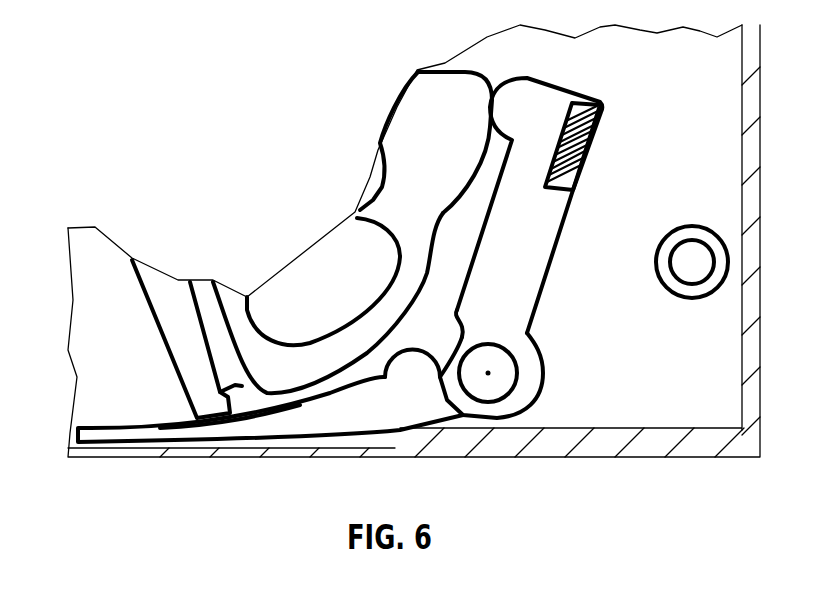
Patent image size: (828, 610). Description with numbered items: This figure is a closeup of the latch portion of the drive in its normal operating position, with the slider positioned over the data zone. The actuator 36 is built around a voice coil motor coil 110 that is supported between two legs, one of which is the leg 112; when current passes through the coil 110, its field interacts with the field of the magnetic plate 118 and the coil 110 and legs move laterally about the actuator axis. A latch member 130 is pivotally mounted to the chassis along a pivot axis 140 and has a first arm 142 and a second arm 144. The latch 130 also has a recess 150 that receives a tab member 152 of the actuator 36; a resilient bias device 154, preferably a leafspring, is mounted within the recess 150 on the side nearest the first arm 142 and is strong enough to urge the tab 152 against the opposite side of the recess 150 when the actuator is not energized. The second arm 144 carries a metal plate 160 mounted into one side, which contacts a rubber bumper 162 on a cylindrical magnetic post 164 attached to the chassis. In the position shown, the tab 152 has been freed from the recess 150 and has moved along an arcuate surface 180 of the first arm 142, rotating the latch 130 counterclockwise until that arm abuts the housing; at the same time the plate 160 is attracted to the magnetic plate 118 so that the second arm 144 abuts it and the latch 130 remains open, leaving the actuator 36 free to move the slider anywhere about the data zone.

The actuator 36 is at (215, 282).
The voice coil motor coil 110 is at (210, 297).
The leg 112 is at (178, 295).
The magnetic plate 118 is at (426, 142).
The latch member 130 is at (530, 385).
The pivot axis 140 is at (488, 373).
The first arm 142 is at (290, 425).
The second arm 144 is at (530, 250).
The recess 150 is at (467, 327).
The tab member 152 is at (202, 397).
The resilient bias device 154 is at (420, 378).
The metal plate 160 is at (587, 148).
The rubber bumper 162 is at (687, 288).
The cylindrical magnetic post 164 is at (697, 262).
The arcuate surface 180 is at (247, 422).